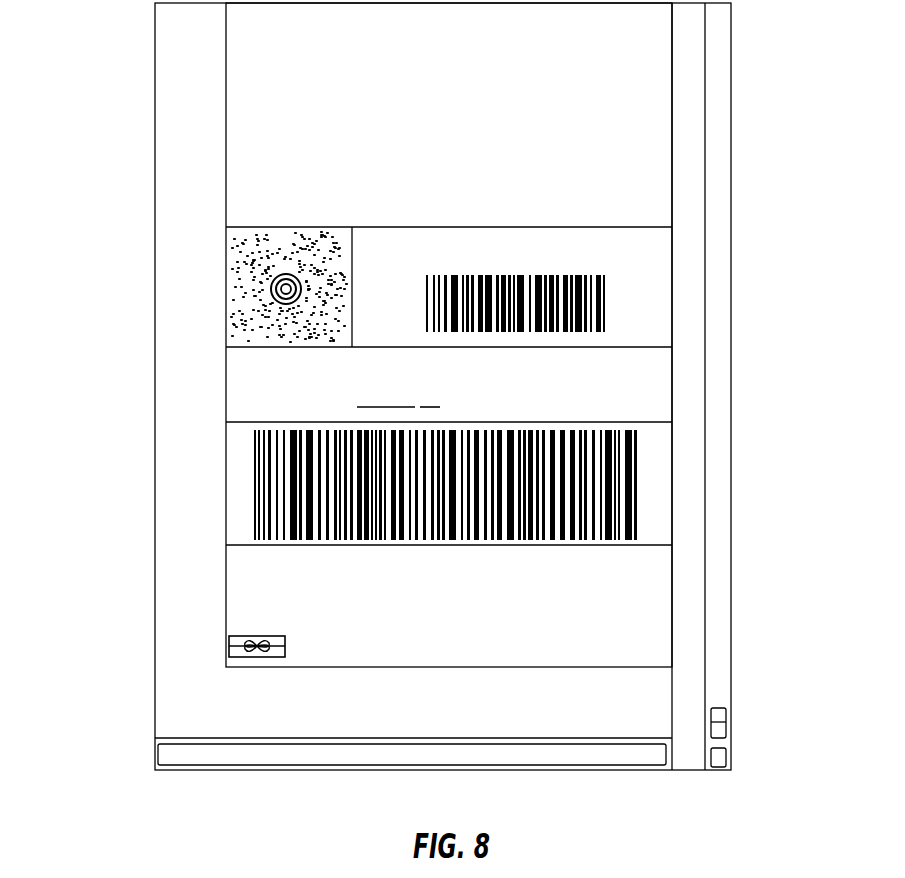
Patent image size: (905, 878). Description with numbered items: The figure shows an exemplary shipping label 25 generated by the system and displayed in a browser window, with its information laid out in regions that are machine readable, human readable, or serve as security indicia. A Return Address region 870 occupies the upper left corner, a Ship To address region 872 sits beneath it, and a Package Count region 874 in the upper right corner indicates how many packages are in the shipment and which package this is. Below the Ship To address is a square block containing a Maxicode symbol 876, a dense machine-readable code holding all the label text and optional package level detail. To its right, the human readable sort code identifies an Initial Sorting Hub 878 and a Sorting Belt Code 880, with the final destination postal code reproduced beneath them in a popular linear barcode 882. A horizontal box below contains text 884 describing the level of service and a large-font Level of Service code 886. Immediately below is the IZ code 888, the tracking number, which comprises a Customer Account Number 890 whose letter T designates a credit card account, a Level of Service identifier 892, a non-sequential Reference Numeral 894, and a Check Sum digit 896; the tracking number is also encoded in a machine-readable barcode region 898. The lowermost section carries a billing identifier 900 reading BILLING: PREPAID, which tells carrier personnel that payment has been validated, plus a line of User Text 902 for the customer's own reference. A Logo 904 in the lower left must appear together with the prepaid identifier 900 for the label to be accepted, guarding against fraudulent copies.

The shipping label 25 is at (100, 135).
The Return Address region 870 is at (225, 10).
The Ship To address region 872 is at (225, 95).
The Package Count region 874 is at (651, 34).
The Maxicode symbol 876 is at (237, 319).
The Initial Sorting Hub 878 is at (576, 227).
The Sorting Belt Code 880 is at (634, 227).
The Sort Code region / barcode 882 is at (422, 310).
The level of service text 884 is at (226, 370).
The Level of Service code 886 is at (595, 373).
The IZ code 888 is at (338, 410).
The Customer Account Number 890 is at (385, 410).
The Level of Service identifier 892 is at (430, 410).
The Reference Numeral 894 is at (447, 403).
The Check Sum digit 896 is at (490, 403).
The machine-readable barcode region 898 is at (640, 518).
The billing identifier 900 is at (412, 565).
The User Text 902 is at (479, 601).
The Logo 904 is at (267, 664).